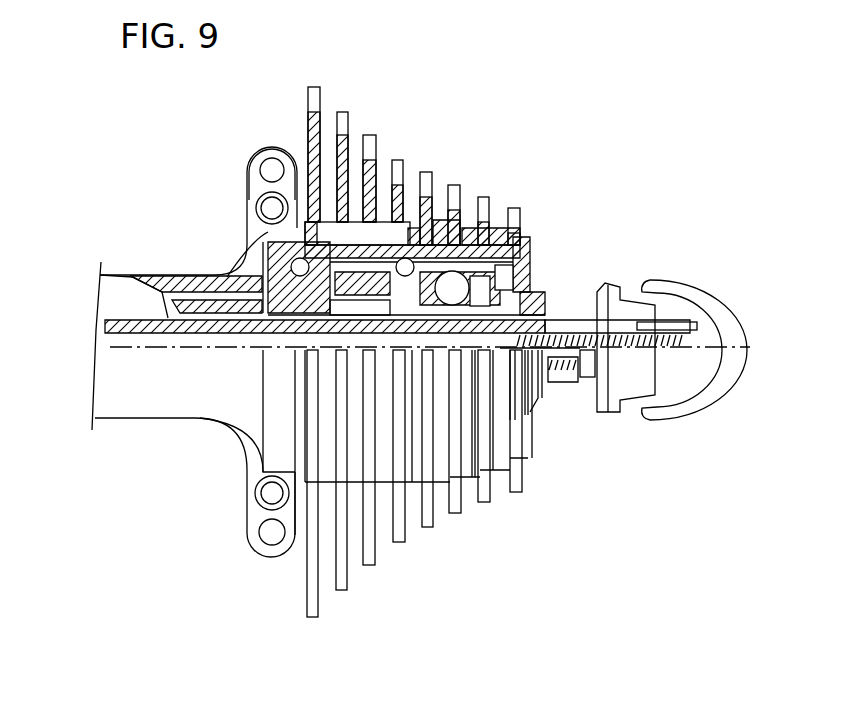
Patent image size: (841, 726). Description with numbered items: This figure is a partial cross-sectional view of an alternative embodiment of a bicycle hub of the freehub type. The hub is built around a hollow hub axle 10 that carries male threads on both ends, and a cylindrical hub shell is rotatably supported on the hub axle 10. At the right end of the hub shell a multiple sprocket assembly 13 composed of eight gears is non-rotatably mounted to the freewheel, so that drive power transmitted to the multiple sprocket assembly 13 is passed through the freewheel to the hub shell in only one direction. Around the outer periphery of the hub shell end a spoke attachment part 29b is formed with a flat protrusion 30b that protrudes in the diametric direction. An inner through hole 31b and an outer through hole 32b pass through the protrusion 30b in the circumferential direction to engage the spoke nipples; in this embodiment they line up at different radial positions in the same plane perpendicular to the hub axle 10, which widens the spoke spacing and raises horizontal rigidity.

The spoke attachment part 29b is at (240, 150).
The flat protrusion 30b is at (262, 148).
The outer through hole 32b is at (264, 173).
The inner through hole 31b is at (262, 206).
The multiple sprocket assembly 13 is at (484, 182).
The hub axle 10 is at (558, 318).